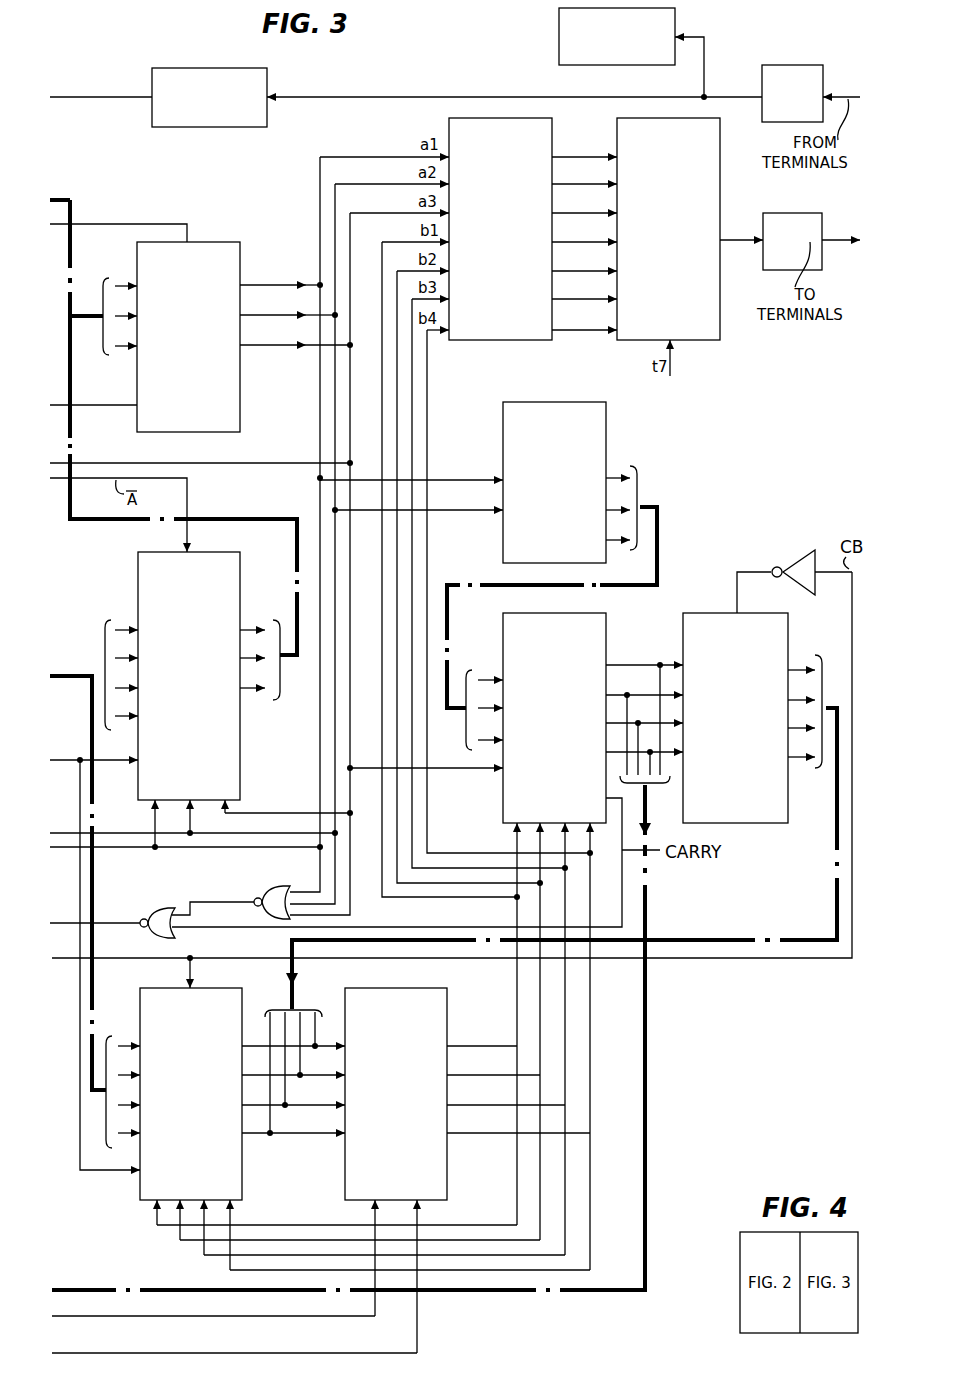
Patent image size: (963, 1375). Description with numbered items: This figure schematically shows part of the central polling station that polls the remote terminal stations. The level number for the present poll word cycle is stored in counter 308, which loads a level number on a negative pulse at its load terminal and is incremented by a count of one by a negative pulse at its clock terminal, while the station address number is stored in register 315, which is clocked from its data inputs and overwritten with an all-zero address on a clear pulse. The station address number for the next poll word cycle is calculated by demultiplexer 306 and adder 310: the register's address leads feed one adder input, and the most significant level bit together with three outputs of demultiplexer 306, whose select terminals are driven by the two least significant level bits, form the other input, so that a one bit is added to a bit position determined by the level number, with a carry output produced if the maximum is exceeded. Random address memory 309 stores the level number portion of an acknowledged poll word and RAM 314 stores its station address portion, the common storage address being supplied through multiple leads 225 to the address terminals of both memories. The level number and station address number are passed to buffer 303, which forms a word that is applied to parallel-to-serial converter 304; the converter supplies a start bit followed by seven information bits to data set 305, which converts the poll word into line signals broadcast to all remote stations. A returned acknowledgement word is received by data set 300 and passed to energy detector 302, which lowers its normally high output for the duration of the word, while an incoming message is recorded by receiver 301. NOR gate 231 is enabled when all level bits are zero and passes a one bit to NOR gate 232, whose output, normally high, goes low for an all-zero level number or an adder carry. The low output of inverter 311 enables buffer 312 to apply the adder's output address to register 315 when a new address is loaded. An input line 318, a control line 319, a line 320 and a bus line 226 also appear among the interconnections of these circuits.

The data set 300 is at (797, 65).
The receiver 301 is at (559, 30).
The energy detector 302 is at (170, 68).
The buffer 303 is at (448, 116).
The parallel-to-serial converter 304 is at (618, 116).
The data set 305 is at (790, 216).
The demultiplexer 306 is at (572, 402).
The counter 308 is at (240, 244).
The random address memory 309 is at (242, 762).
The adder 310 is at (552, 613).
The inverter 311 is at (797, 556).
The buffer 312 is at (766, 823).
The RAM 314 is at (242, 1168).
The register 315 is at (406, 987).
The input line 318 is at (98, 97).
The control line 319 is at (452, 928).
The line 320 is at (116, 463).
The multiple leads 225 is at (61, 678).
The bus line 226 is at (70, 202).
The NOR gate 231 is at (282, 890).
The NOR gate 232 is at (166, 907).